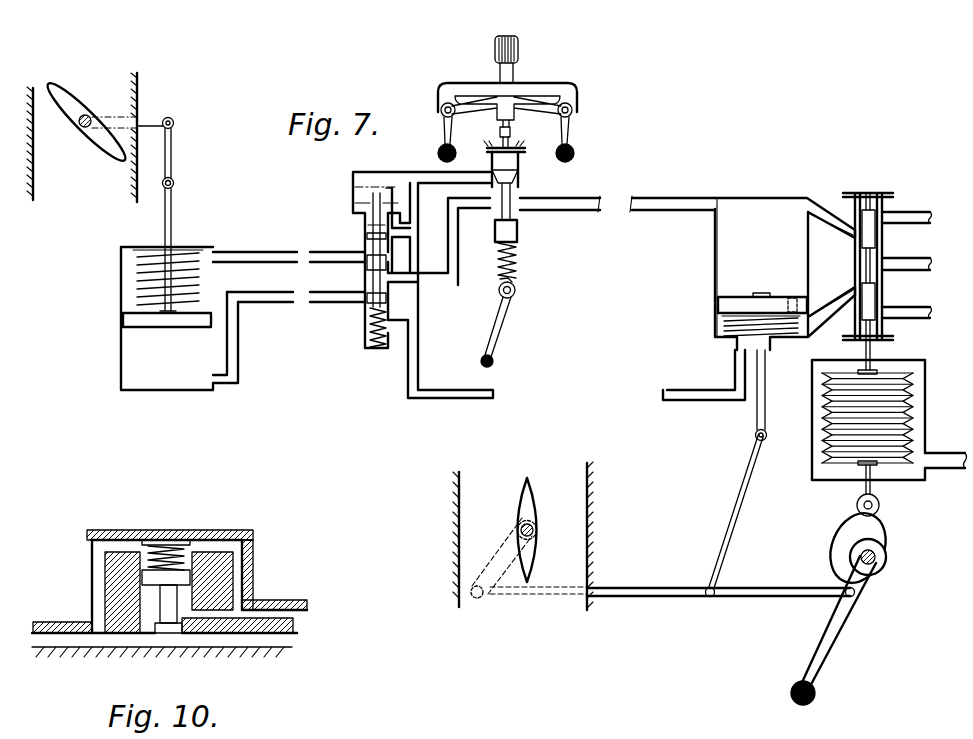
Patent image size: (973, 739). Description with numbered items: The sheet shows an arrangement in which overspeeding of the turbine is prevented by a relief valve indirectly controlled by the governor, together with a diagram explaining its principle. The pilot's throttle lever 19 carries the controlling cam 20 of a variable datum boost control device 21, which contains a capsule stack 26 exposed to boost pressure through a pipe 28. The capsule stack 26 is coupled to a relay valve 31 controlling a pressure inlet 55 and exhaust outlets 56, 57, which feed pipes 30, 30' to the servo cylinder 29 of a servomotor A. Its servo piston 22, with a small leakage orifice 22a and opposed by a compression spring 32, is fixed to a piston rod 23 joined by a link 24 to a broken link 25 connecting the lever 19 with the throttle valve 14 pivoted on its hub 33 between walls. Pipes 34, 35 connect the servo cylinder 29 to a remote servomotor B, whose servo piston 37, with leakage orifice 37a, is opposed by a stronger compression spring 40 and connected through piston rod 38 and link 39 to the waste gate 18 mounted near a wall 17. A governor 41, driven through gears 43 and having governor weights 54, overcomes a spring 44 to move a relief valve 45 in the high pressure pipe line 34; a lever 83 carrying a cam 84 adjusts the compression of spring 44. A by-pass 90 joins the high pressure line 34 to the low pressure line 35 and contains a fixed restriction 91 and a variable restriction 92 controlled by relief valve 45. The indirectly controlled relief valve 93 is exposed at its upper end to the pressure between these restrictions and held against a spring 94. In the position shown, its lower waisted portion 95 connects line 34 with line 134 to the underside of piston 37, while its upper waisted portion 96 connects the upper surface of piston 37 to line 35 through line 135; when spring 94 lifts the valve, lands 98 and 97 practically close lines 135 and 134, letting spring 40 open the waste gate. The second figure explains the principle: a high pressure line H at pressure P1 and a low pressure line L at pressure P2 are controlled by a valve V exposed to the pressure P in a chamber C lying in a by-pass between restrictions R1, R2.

In FIG. 7, the wall 17 is at (33, 163).
In FIG. 7, the waste gate 18 is at (70, 92).
In FIG. 7, the link 39 is at (172, 153).
In FIG. 7, the piston rod 38 is at (172, 210).
In FIG. 7, the compression spring 40 is at (133, 263).
In FIG. 7, the servo piston 37 is at (123, 320).
In FIG. 7, the leakage orifice 37a is at (176, 328).
In FIG. 7, the remote servomotor B is at (119, 370).
In FIG. 7, the line 135 is at (258, 252).
In FIG. 7, the line 134 is at (293, 304).
In FIG. 7, the by-pass 90 is at (422, 172).
In FIG. 7, the fixed restriction 91 is at (411, 192).
In FIG. 7, the land 98 is at (405, 262).
In FIG. 7, the indirectly controlled relief valve 93 is at (372, 238).
In FIG. 7, the upper waisted portion 96 is at (371, 226).
In FIG. 7, the lower waisted portion 95 is at (371, 283).
In FIG. 7, the land 97 is at (366, 313).
In FIG. 7, the spring 94 is at (370, 349).
In FIG. 7, the variable restriction 92 is at (490, 167).
In FIG. 7, the relief valve 45 is at (516, 200).
In FIG. 7, the spring 44 is at (517, 256).
In FIG. 7, the cam 84 is at (499, 289).
In FIG. 7, the lever 83 is at (506, 325).
In FIG. 7, the pipe 35 is at (473, 398).
In FIG. 7, the gears 43 is at (519, 53).
In FIG. 7, the governor 41 is at (520, 95).
In FIG. 7, the governor weights 54 is at (573, 149).
In FIG. 7, the pipe 34 is at (616, 210).
In FIG. 7, the servomotor A is at (715, 236).
In FIG. 7, the servo cylinder 29 is at (715, 258).
In FIG. 7, the pipe 30 is at (831, 234).
In FIG. 7, the pipe 30' is at (831, 295).
In FIG. 7, the servo piston 22 is at (718, 300).
In FIG. 7, the leakage orifice 22a is at (793, 298).
In FIG. 7, the compression spring 32 is at (722, 325).
In FIG. 7, the relay valve 31 is at (882, 240).
In FIG. 7, the exhaust outlet 56 is at (908, 213).
In FIG. 7, the pressure inlet 55 is at (908, 263).
In FIG. 7, the exhaust outlet 57 is at (906, 310).
In FIG. 7, the variable datum boost control device 21 is at (925, 378).
In FIG. 7, the pipe 28 is at (936, 453).
In FIG. 7, the capsule stack 26 is at (822, 438).
In FIG. 7, the controlling cam 20 is at (832, 540).
In FIG. 7, the pilot's throttle lever 19 is at (818, 648).
In FIG. 7, the piston rod 23 is at (766, 367).
In FIG. 7, the link 24 is at (748, 487).
In FIG. 7, the broken link 25 is at (745, 597).
In FIG. 7, the throttle valve 14 is at (522, 489).
In FIG. 7, the hub 33 is at (533, 527).
In FIG. 10, the high pressure line H is at (60, 653).
In FIG. 10, the low pressure line L is at (295, 633).
In FIG. 10, the restriction R1 is at (100, 568).
In FIG. 10, the restriction R2 is at (240, 575).
In FIG. 10, the chamber C is at (147, 540).
In FIG. 10, the pressure P is at (181, 540).
In FIG. 10, the valve V is at (165, 605).
In FIG. 10, the pressure P1 is at (168, 647).
In FIG. 10, the pressure P2 is at (222, 640).